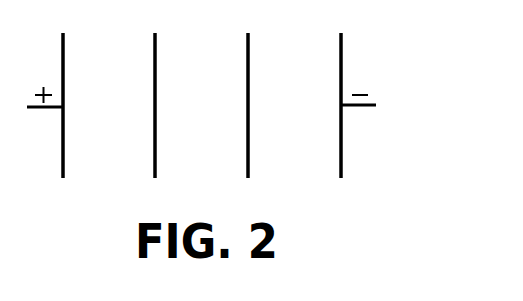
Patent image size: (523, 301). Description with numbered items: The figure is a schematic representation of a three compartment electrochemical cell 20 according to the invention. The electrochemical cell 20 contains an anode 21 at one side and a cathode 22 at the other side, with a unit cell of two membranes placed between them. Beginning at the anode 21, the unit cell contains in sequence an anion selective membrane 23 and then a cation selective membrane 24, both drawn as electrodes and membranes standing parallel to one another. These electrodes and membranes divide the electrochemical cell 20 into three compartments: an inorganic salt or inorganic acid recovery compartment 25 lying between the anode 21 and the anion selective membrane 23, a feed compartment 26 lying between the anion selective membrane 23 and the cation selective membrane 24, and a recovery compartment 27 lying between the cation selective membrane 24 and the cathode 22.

The electrochemical cell 20 is at (403, 46).
The anode 21 is at (50, 93).
The cathode 22 is at (349, 93).
The anion selective membrane 23 is at (154, 93).
The cation selective membrane 24 is at (247, 93).
The inorganic salt or inorganic acid recovery compartment 25 is at (106, 169).
The feed compartment 26 is at (199, 169).
The recovery compartment 27 is at (291, 169).